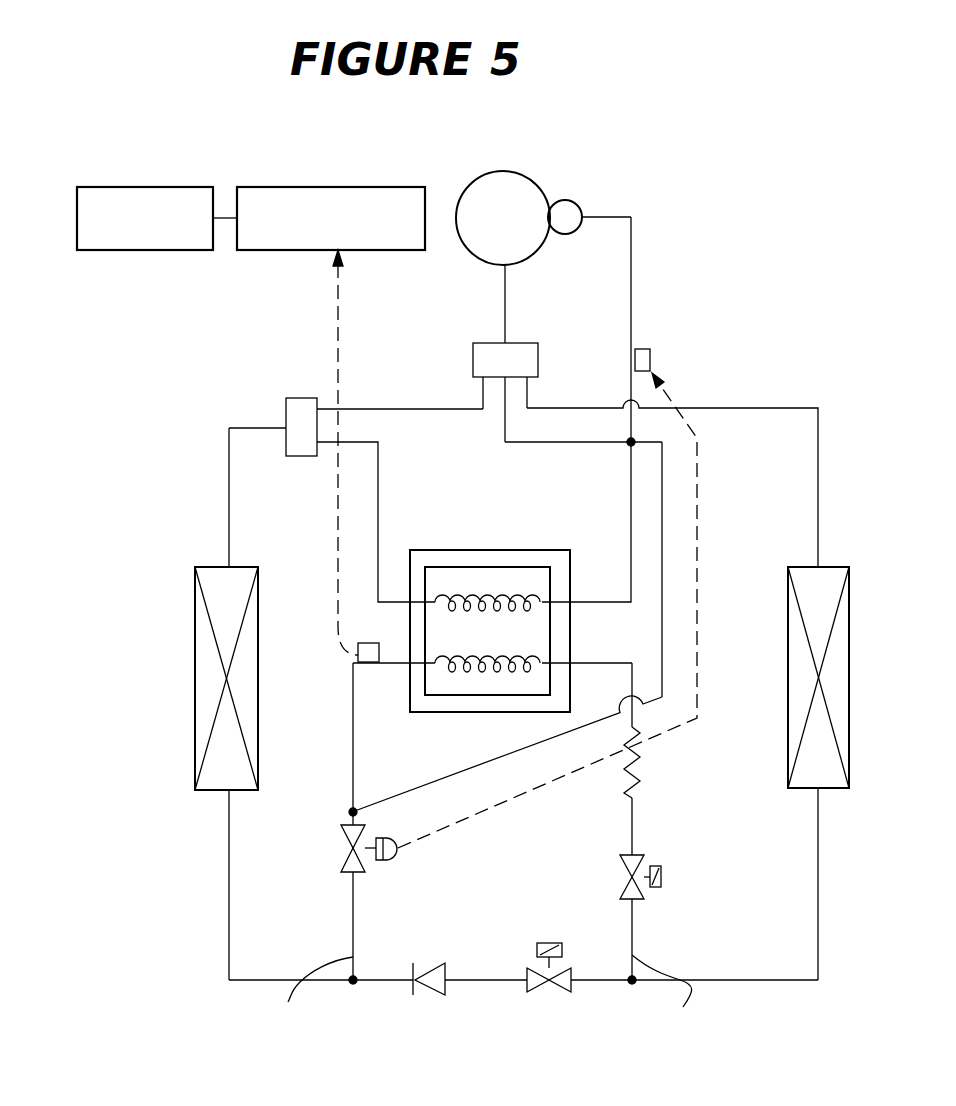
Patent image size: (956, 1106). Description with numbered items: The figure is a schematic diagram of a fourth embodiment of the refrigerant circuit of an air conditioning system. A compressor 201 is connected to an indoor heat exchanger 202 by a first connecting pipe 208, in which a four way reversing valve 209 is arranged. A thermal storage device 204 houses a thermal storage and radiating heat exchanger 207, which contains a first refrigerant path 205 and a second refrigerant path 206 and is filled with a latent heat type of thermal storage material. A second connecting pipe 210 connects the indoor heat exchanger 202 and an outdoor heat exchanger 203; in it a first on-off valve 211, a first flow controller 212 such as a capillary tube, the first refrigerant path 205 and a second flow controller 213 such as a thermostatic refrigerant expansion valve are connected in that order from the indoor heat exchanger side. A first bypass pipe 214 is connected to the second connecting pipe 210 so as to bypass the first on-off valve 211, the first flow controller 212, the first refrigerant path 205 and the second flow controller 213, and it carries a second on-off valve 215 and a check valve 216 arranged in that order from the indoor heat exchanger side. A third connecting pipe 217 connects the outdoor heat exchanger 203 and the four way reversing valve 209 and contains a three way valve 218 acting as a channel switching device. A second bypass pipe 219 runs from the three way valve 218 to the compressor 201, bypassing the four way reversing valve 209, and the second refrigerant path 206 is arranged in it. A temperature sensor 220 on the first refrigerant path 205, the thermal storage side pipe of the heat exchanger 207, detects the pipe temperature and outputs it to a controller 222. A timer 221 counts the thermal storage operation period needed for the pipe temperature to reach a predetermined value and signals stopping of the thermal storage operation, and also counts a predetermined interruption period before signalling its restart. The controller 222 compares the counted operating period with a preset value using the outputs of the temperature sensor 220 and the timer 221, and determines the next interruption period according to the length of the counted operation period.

The compressor 201 is at (535, 183).
The indoor heat exchanger 202 is at (788, 695).
The outdoor heat exchanger 203 is at (195, 722).
The thermal storage device 204 is at (528, 550).
The first refrigerant path 205 is at (450, 668).
The second refrigerant path 206 is at (458, 590).
The thermal storage and radiating heat exchanger 207 is at (425, 680).
The first connecting pipe 208 is at (506, 292).
The four way reversing valve 209 is at (473, 352).
The second connecting pipe 210 is at (523, 997).
The first on-off valve 211 is at (620, 885).
The first flow controller 212 is at (640, 768).
The second flow controller 213 is at (342, 858).
The first bypass pipe 214 is at (470, 982).
The second on-off valve 215 is at (550, 992).
The check valve 216 is at (419, 985).
The third connecting pipe 217 is at (380, 409).
The three way valve 218 is at (298, 456).
The second bypass pipe 219 is at (380, 470).
The temperature sensor 220 is at (356, 655).
The timer 221 is at (153, 187).
The controller 222 is at (330, 187).